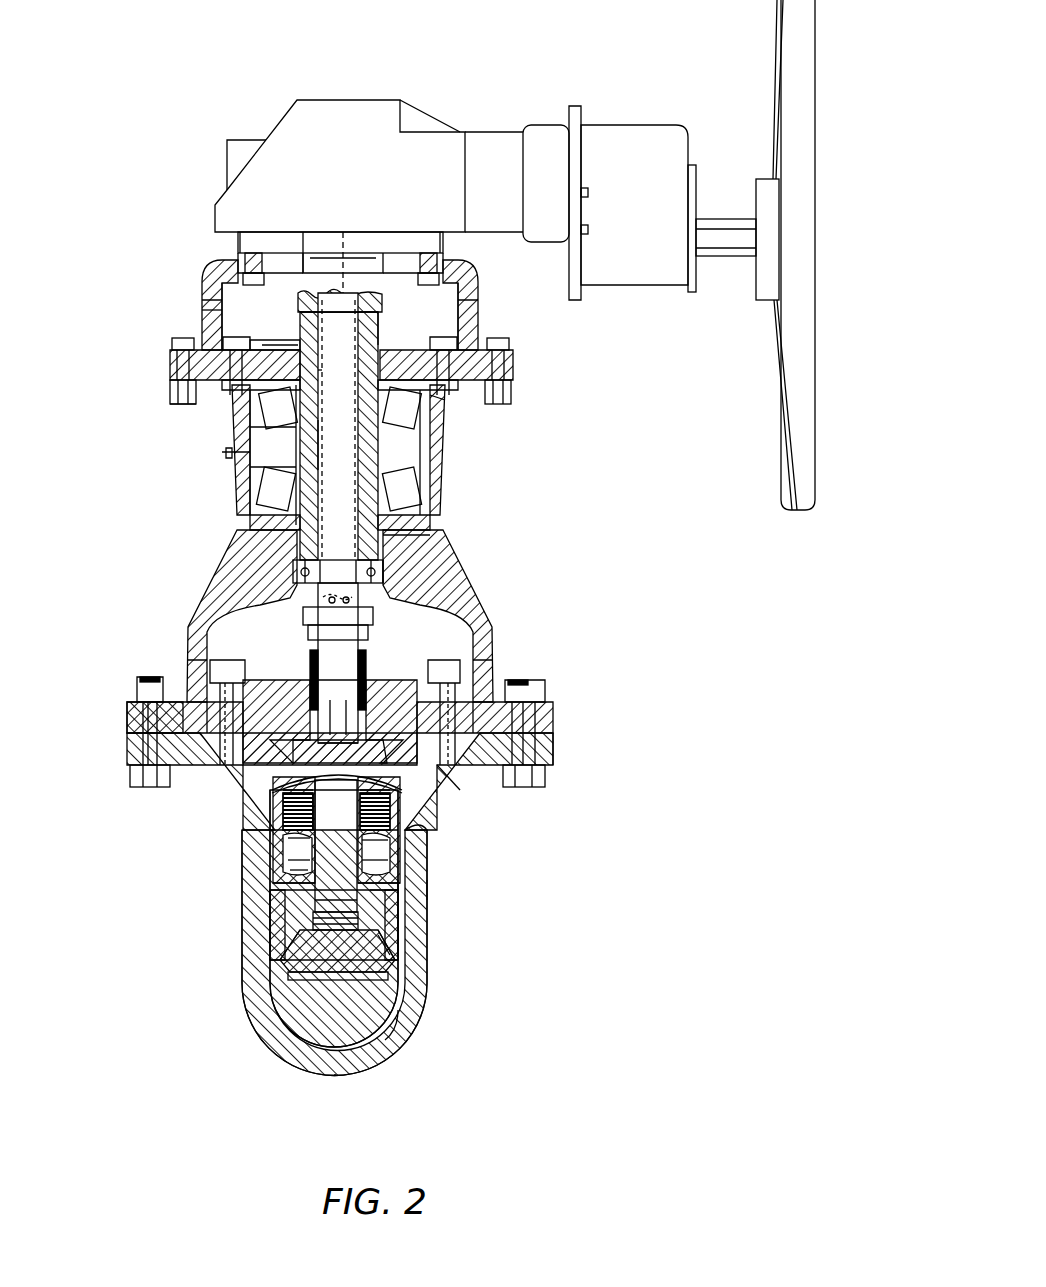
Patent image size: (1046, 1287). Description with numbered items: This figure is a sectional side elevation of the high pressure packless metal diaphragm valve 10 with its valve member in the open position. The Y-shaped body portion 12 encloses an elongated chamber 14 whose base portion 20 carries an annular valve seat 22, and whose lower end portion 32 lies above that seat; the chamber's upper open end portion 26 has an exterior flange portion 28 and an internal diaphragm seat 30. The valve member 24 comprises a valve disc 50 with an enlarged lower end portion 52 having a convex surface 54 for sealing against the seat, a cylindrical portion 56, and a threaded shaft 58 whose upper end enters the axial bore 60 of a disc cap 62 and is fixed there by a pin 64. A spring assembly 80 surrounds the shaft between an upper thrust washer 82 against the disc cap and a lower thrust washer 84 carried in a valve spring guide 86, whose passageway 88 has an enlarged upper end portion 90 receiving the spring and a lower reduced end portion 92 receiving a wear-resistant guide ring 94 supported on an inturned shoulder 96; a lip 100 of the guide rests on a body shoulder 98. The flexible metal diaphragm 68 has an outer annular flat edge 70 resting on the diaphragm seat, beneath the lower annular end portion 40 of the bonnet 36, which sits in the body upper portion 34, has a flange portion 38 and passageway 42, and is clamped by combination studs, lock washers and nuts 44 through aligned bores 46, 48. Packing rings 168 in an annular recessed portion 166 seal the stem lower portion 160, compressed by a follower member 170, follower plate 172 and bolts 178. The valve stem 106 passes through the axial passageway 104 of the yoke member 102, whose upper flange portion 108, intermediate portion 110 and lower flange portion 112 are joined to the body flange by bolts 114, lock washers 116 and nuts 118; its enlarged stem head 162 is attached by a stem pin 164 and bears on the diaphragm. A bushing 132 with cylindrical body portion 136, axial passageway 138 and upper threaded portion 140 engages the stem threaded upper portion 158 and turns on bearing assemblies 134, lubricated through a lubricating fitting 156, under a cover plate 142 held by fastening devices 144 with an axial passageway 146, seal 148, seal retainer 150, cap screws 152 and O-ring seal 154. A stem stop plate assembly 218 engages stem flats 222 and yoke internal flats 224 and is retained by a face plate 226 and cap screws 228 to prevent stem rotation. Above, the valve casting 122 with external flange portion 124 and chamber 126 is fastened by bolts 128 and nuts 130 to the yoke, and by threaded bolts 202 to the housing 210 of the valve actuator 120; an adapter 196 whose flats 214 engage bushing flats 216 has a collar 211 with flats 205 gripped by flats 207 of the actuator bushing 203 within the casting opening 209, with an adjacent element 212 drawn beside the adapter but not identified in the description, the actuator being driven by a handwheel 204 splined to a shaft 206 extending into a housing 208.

The diaphragm valve 10 is at (192, 170).
The body portion 12 is at (280, 1063).
The chamber 14 is at (334, 925).
The base portion 20 is at (262, 1025).
The valve seat 22 is at (390, 950).
The valve member 24 is at (400, 1005).
The upper open end portion 26 is at (280, 740).
The exterior flange portion 28 is at (132, 750).
The diaphragm seat 30 is at (420, 840).
The lower end portion 32 is at (395, 945).
The upper portion 34 is at (480, 775).
The bonnet 36 is at (450, 672).
The flange portion 38 is at (230, 700).
The lower annular end portion 40 is at (425, 800).
The passageway 42 is at (330, 718).
The combination studs, lock washers and nuts 44 is at (215, 660).
The bore 46 is at (478, 700).
The bore 48 is at (445, 772).
The valve disc 50 is at (272, 968).
The lower end portion 52 is at (283, 940).
The convex surface 54 is at (290, 978).
The cylindrical portion 56 is at (390, 930).
The threaded shaft 58 is at (336, 846).
The axial bore 60 is at (352, 778).
The disc cap 62 is at (282, 785).
The pin 64 is at (357, 810).
The flexible metal diaphragm 68 is at (392, 845).
The outer annular flat edge 70 is at (425, 820).
The spring assembly 80 is at (360, 822).
The thrust washer 82 is at (280, 800).
The thrust washer 84 is at (275, 880).
The valve spring guide 86 is at (398, 882).
The passageway 88 is at (398, 895).
The enlarged upper end portion 90 is at (392, 862).
The lower reduced end portion 92 is at (280, 892).
The guide ring 94 is at (293, 872).
The inturned shoulder 96 is at (358, 905).
The shoulder 98 is at (290, 862).
The lip 100 is at (285, 845).
The yoke member 102 is at (195, 583).
The axial passageway 104 is at (390, 575).
The valve stem 106 is at (340, 527).
The upper flange portion 108 is at (236, 405).
The intermediate portion 110 is at (197, 625).
The lower flange portion 112 is at (138, 725).
The bolts 114 is at (130, 778).
The lock washers 116 is at (135, 712).
The nuts 118 is at (138, 685).
The valve actuator 120 is at (405, 98).
The valve casting 122 is at (210, 280).
The external flange portion 124 is at (185, 365).
The chamber 126 is at (232, 300).
The bolts 128 is at (178, 398).
The nuts 130 is at (172, 345).
The bushing 132 is at (262, 460).
The bearing assemblies 134 is at (265, 490).
The cylindrical body portion 136 is at (420, 460).
The axial passageway 138 is at (358, 448).
The upper threaded portion 140 is at (333, 360).
The cover plate 142 is at (440, 345).
The fastening devices 144 is at (232, 342).
The axial passageway 146 is at (318, 386).
The seal 148 is at (300, 318).
The seal retainer 150 is at (285, 345).
The cap screws 152 is at (290, 338).
The O-ring seal 154 is at (425, 408).
The lubricating fitting 156 is at (226, 452).
The threaded upper portion 158 is at (322, 430).
The lower portion 160 is at (338, 663).
The stem head 162 is at (285, 790).
The stem pin 164 is at (338, 712).
The annular recessed portion 166 is at (366, 672).
The packing rings 168 is at (310, 675).
The follower member 170 is at (368, 630).
The follower plate 172 is at (373, 615).
The bolts 178 is at (322, 600).
The adapter 196 is at (380, 305).
The threaded bolts 202 is at (212, 272).
The bushing 203 is at (405, 258).
The handwheel 204 is at (790, 455).
The flats 205 is at (398, 262).
The shaft 206 is at (735, 230).
The flats 207 is at (402, 262).
The housing 208 is at (617, 135).
The opening 209 is at (280, 258).
The housing 210 is at (283, 130).
The collar 211 is at (382, 253).
The nut 212 is at (382, 322).
The flats 214 is at (350, 255).
The flats 216 is at (305, 253).
The stem stop plate assembly 218 is at (400, 540).
The flats 222 is at (320, 565).
The internal flats 224 is at (293, 570).
The face plate 226 is at (378, 575).
The cap screws 228 is at (300, 575).